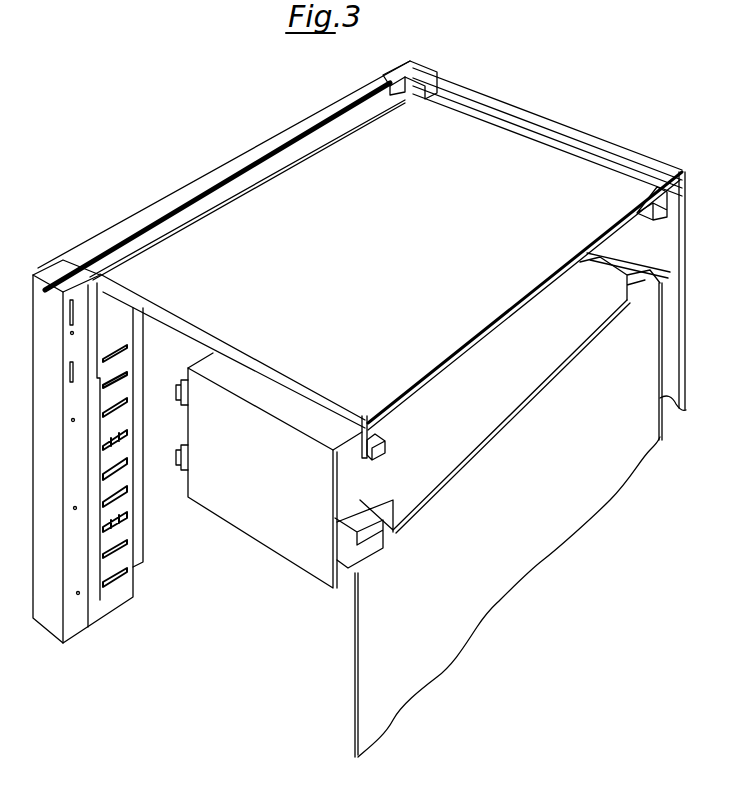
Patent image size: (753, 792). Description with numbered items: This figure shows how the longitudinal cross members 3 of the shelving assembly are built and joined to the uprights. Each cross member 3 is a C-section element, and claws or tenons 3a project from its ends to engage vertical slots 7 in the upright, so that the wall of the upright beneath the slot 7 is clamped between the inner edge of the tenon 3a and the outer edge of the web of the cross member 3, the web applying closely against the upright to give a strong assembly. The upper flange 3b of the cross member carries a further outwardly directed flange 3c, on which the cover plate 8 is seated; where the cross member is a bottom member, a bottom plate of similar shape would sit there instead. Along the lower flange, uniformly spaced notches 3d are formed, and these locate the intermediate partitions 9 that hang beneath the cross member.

The longitudinal cross member 3 is at (228, 490).
The tenon 3a is at (180, 395).
The upper flange 3b is at (349, 452).
The outwardly directed flange 3c is at (380, 452).
The notch 3d is at (582, 266).
The vertical slot 7 is at (67, 372).
The cover plate 8 is at (460, 133).
The intermediate partition 9 is at (543, 527).